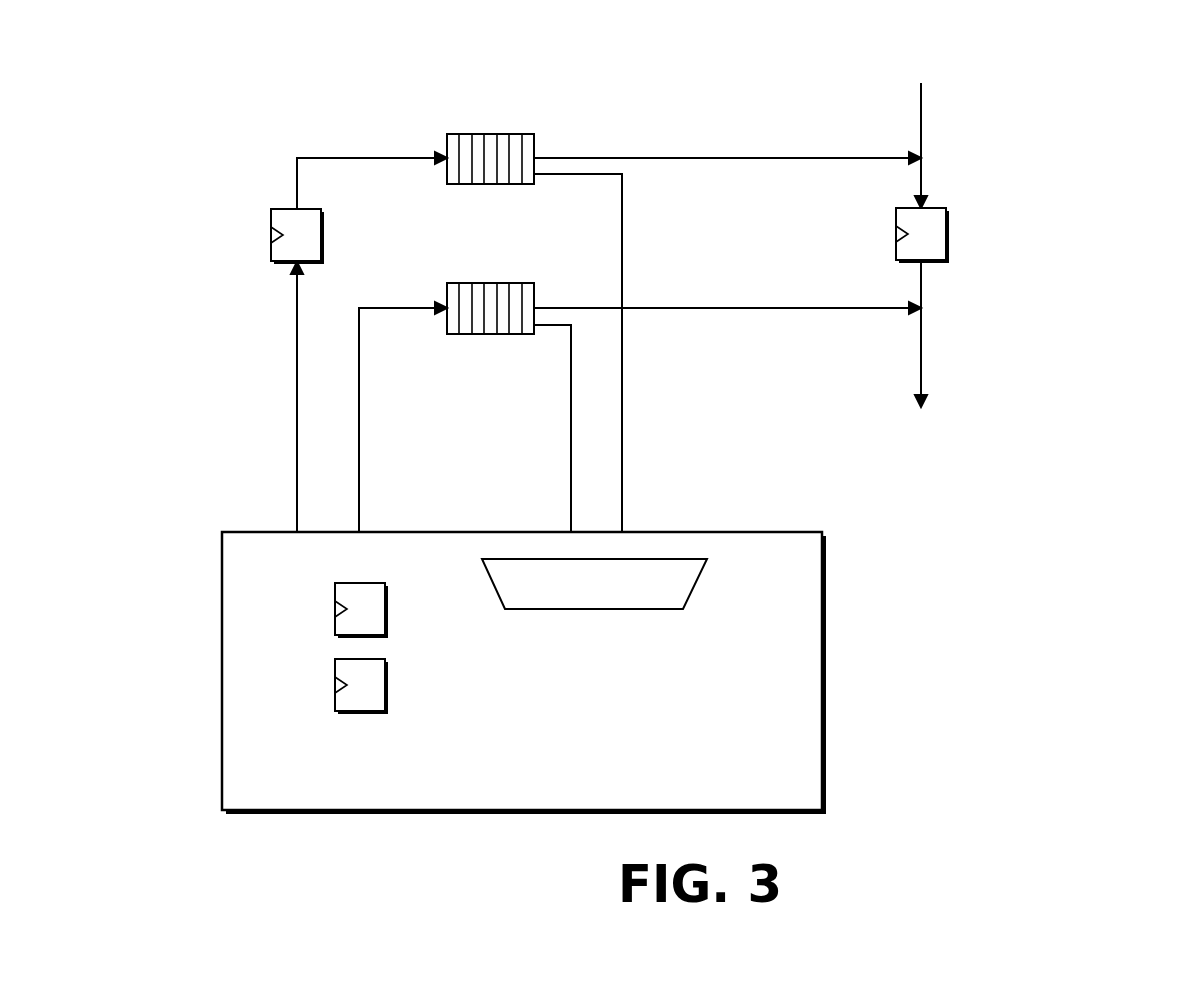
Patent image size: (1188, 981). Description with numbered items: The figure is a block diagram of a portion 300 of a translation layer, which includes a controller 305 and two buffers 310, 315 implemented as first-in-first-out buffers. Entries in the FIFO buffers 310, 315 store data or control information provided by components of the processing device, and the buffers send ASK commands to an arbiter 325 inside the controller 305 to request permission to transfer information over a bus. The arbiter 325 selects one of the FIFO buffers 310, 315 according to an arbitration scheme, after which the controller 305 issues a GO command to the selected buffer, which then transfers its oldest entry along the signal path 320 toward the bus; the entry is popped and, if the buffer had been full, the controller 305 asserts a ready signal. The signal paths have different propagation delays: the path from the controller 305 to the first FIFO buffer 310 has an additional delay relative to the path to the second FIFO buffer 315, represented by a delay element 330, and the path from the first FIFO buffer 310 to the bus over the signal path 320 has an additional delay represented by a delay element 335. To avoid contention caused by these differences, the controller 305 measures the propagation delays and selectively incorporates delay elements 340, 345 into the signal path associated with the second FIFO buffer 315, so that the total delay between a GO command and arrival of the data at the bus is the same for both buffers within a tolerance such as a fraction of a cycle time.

The portion of a translation layer 300 is at (1100, 83).
The controller 305 is at (757, 783).
The first FIFO buffer 310 is at (537, 147).
The second FIFO buffer 315 is at (537, 297).
The signal path 320 is at (923, 108).
The arbiter 325 is at (653, 593).
The delay element 330 is at (278, 207).
The delay element 335 is at (950, 235).
The delay element 340 is at (390, 684).
The delay element 345 is at (390, 608).